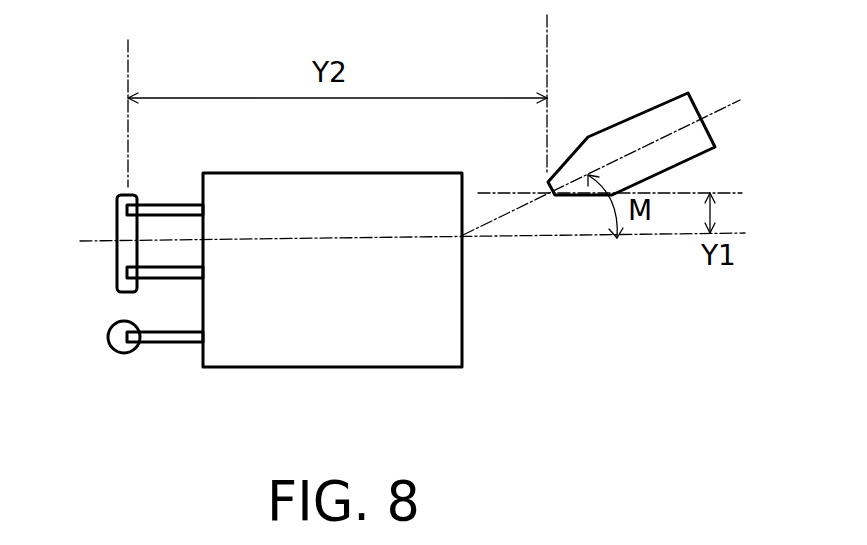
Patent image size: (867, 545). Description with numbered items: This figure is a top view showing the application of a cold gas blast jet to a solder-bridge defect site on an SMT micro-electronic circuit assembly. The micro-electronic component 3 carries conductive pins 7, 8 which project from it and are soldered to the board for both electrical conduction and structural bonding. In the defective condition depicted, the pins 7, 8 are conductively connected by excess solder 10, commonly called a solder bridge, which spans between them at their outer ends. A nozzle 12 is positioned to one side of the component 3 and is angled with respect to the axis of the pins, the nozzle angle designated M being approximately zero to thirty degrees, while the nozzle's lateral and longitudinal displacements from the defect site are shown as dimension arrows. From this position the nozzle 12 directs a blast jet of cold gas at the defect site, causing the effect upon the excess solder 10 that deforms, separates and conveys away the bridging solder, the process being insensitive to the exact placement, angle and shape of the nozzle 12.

The micro-electronic component 3 is at (278, 368).
The conductive pin 7 is at (158, 205).
The conductive pin 8 is at (160, 282).
The excess solder 10 is at (117, 227).
The nozzle 12 is at (677, 95).